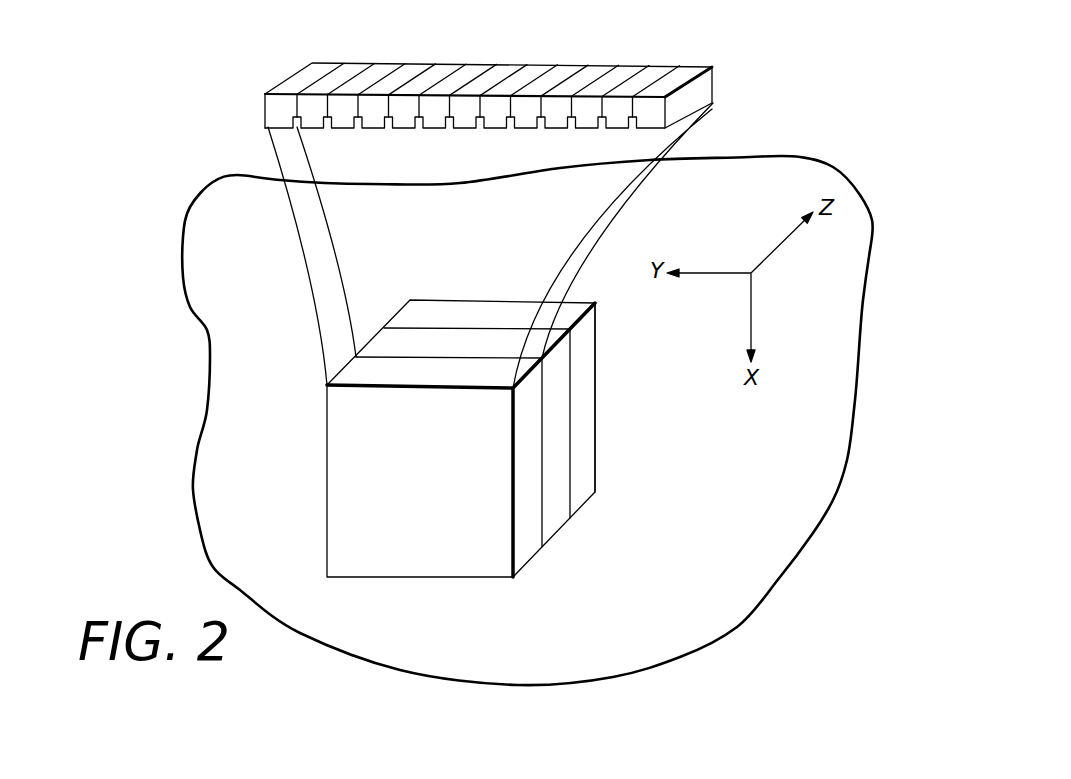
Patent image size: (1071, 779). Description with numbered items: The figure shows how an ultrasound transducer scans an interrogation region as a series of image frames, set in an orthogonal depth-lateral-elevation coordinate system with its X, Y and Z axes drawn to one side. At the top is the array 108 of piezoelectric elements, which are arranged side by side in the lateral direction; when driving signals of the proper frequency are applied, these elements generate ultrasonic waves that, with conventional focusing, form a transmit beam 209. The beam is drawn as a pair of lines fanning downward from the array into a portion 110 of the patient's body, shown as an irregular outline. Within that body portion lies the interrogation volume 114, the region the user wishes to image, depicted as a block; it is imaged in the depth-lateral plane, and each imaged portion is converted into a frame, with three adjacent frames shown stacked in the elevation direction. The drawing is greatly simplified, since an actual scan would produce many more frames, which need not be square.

The array of piezoelectric elements 108 is at (717, 84).
The transmit beam 209 is at (308, 260).
The portion of the patient's body 110 is at (200, 531).
The interrogation region 114 is at (325, 462).